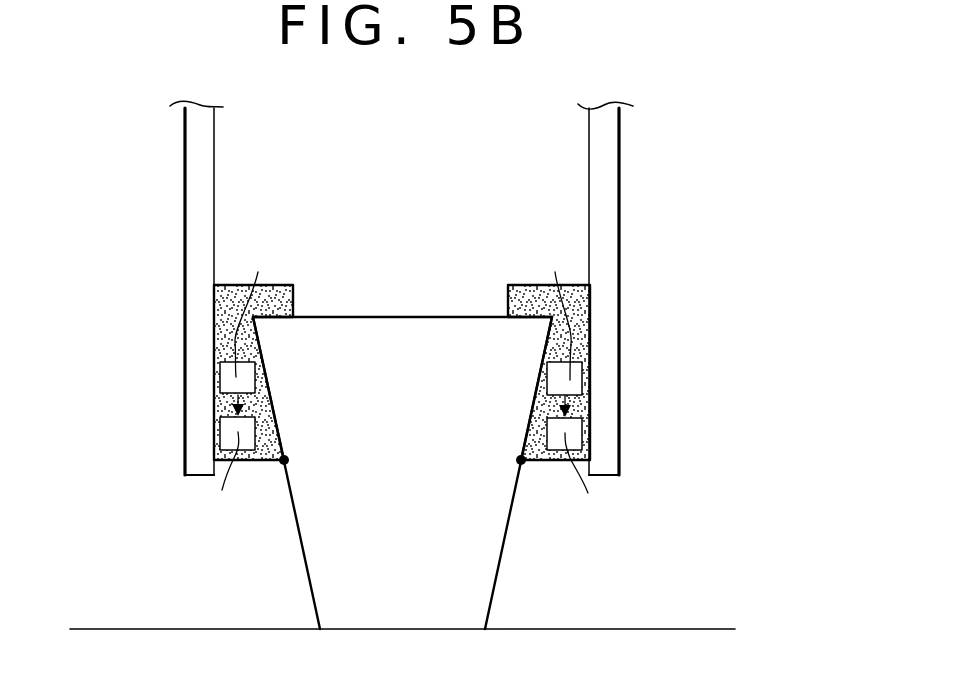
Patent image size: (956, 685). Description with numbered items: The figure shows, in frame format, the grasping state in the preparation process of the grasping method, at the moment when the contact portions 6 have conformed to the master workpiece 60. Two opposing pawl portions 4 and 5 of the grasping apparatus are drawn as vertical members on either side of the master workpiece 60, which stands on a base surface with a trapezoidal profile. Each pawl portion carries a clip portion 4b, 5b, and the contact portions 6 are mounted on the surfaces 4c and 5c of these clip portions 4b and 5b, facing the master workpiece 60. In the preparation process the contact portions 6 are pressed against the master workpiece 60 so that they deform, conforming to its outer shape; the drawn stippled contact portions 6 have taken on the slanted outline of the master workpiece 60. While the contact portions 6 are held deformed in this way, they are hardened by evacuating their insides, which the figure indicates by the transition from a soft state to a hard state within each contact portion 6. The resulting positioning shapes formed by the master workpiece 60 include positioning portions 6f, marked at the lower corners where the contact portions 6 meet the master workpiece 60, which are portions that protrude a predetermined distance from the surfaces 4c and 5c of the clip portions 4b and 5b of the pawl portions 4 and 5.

The pawl portion 4 is at (170, 163).
The clip portion 4b is at (186, 278).
The surface of clip portion 4c is at (212, 221).
The pawl portion 5 is at (633, 163).
The clip portion 5b is at (619, 281).
The surface of clip portion 5c is at (591, 210).
The contact portion 6 is at (310, 291).
The positioning portion 6f is at (286, 461).
The master workpiece 60 is at (517, 565).